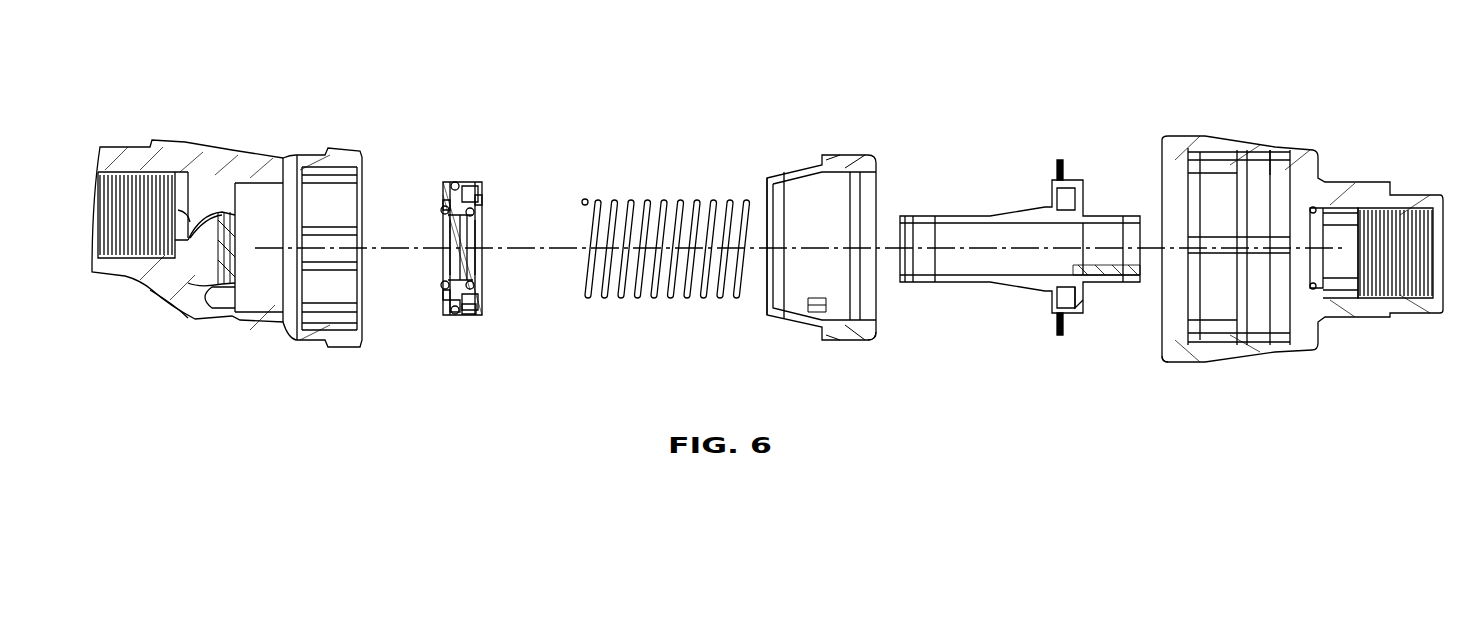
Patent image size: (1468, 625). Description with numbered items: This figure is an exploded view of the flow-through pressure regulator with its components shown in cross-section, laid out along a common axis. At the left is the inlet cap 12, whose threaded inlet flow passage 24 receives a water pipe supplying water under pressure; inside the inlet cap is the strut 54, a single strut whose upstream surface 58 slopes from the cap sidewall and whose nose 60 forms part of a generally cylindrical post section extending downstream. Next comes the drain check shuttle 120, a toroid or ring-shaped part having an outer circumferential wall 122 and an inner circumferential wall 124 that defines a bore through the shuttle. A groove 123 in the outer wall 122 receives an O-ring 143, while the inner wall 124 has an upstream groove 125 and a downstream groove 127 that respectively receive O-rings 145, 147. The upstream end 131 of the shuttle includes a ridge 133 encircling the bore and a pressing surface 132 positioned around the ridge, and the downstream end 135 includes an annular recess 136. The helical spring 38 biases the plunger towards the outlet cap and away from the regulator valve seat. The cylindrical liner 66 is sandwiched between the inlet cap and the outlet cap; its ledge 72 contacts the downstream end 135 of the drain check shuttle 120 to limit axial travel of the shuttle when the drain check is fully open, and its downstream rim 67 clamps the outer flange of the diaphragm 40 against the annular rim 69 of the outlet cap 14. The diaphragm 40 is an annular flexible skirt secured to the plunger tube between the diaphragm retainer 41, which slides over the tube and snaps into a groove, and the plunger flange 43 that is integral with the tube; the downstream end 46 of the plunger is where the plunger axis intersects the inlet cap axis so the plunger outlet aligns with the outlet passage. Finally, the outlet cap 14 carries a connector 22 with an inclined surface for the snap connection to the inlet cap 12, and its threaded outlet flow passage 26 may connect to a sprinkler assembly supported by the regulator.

The inlet cap 12 is at (301, 124).
The outlet cap 14 is at (1356, 145).
The connector 22 is at (1183, 347).
The inlet flow passage 24 is at (134, 205).
The outlet flow passage 26 is at (1423, 250).
The helical spring 38 is at (678, 203).
The diaphragm 40 is at (1062, 172).
The diaphragm retainer 41 is at (1057, 335).
The plunger flange 43 is at (1070, 297).
The downstream end 46 is at (1145, 220).
The strut 54 is at (185, 318).
The upstream surface 58 is at (190, 218).
The nose 60 is at (223, 210).
The cylindrical liner 66 is at (800, 348).
The downstream rim 67 is at (872, 332).
The annular rim 69 is at (1272, 172).
The ledge 72 is at (767, 213).
The drain check shuttle 120 is at (466, 148).
The outer circumferential wall 122 is at (468, 190).
The groove 123 is at (466, 314).
The inner circumferential wall 124 is at (447, 275).
The upstream groove 125 is at (440, 205).
The downstream groove 127 is at (485, 200).
The upstream end 131 is at (440, 258).
The pressing surface 132 is at (455, 305).
The ridge 133 is at (445, 297).
The downstream end 135 is at (485, 260).
The annular recess 136 is at (482, 298).
The O-ring 143 is at (455, 314).
The O-ring 145 is at (440, 206).
The O-ring 147 is at (483, 218).